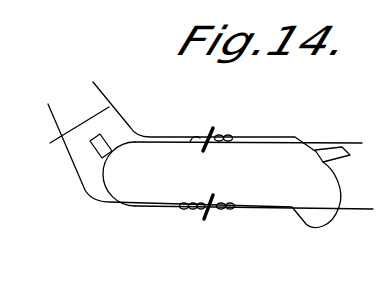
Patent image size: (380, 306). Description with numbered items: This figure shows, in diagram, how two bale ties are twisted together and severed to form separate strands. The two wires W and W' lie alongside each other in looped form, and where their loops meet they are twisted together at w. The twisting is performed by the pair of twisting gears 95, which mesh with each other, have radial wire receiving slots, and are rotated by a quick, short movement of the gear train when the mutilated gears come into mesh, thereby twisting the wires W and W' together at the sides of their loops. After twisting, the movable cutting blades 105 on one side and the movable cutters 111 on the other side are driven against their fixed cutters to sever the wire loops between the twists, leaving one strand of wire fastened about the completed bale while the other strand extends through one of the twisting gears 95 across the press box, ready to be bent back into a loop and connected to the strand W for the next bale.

The wire W is at (184, 154).
The wire W' is at (238, 173).
The twist w is at (190, 137).
The twisting gears 95 is at (214, 133).
The cutting blades 105 is at (111, 154).
The cutters 111 is at (333, 160).